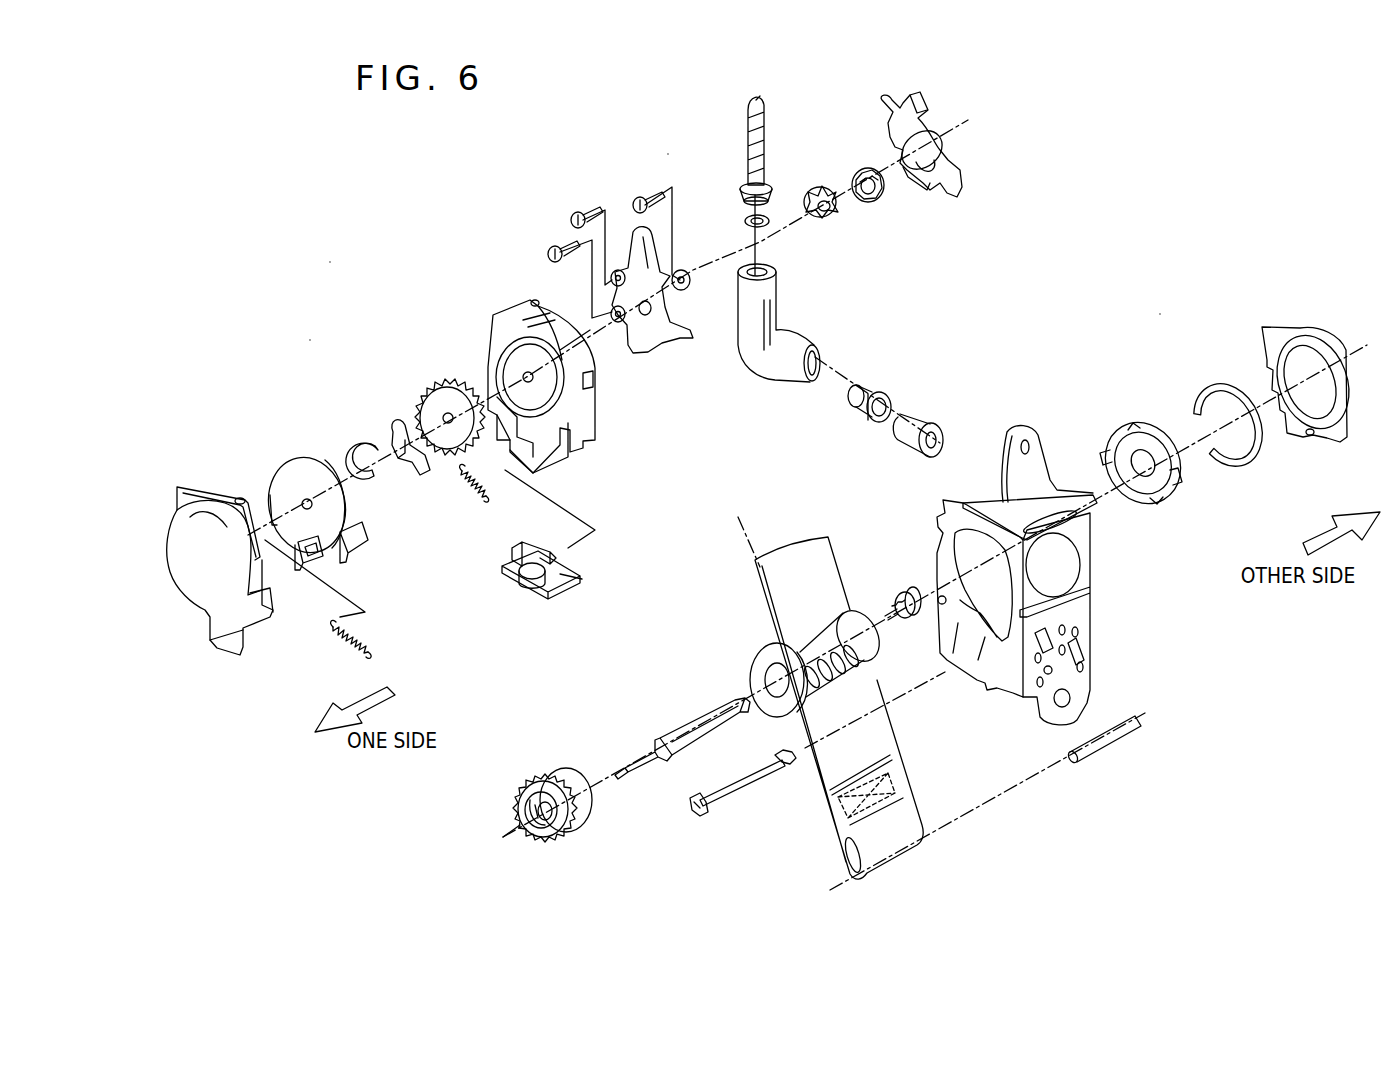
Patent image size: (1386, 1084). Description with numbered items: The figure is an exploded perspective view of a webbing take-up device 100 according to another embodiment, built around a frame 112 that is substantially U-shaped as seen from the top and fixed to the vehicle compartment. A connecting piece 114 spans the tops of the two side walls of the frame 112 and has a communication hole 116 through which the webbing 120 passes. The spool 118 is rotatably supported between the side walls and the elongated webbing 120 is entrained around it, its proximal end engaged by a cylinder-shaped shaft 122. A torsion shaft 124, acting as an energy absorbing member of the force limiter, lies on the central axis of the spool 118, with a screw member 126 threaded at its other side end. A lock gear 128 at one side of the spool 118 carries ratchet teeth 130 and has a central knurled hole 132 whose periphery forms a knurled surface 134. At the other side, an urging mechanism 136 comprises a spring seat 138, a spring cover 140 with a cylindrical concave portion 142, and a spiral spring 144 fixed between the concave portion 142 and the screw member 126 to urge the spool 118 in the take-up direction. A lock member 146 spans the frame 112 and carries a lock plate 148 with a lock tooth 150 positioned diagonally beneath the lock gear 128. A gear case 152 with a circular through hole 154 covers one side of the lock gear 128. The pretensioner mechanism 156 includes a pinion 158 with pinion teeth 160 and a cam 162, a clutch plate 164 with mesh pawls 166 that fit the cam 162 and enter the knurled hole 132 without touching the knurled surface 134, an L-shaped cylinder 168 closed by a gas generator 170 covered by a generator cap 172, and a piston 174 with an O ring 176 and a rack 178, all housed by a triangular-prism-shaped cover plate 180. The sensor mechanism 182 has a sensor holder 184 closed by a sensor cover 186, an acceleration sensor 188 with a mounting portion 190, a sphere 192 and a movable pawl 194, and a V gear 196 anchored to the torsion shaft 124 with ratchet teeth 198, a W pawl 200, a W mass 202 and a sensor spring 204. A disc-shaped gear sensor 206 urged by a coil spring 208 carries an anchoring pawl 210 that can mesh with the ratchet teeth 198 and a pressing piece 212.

The webbing take-up device 100 is at (330, 258).
The frame 112 is at (942, 545).
The connecting piece 114 is at (1050, 428).
The communication hole 116 is at (1074, 496).
The spool 118 is at (760, 650).
The webbing 120 is at (822, 548).
The shaft 122 is at (1115, 742).
The torsion shaft 124 is at (690, 725).
The screw member 126 is at (900, 595).
The lock gear 128 is at (555, 772).
The ratchet teeth 130 is at (580, 808).
The knurled hole 132 is at (525, 815).
The knurled surface 134 is at (533, 830).
The urging mechanism 136 is at (1160, 312).
The spring seat 138 is at (1140, 425).
The spring cover 140 is at (1322, 335).
The concave portion 142 is at (1320, 418).
The spiral spring 144 is at (1224, 382).
The lock member 146 is at (758, 800).
The lock plate 148 is at (698, 812).
The lock tooth 150 is at (698, 780).
The gear case 152 is at (884, 108).
The through hole 154 is at (925, 168).
The pretensioner mechanism 156 is at (668, 152).
The pinion 158 is at (815, 182).
The pinion teeth 160 is at (829, 220).
The cam 162 is at (853, 205).
The clutch plate 164 is at (858, 160).
The mesh pawls 166 is at (872, 195).
The cylinder 168 is at (778, 310).
The gas generator 170 is at (855, 392).
The generator cap 172 is at (914, 425).
The piston 174 is at (745, 108).
The O ring 176 is at (745, 219).
The rack 178 is at (765, 108).
The cover plate 180 is at (635, 240).
The sensor mechanism 182 is at (310, 338).
The sensor holder 184 is at (515, 306).
The sensor cover 186 is at (200, 485).
The acceleration sensor 188 is at (568, 570).
The mounting portion 190 is at (498, 566).
The sphere 192 is at (532, 586).
The movable pawl 194 is at (545, 550).
The V gear 196 is at (440, 383).
The ratchet teeth 198 is at (528, 499).
The W pawl 200 is at (398, 428).
The W mass 202 is at (356, 446).
The sensor spring 204 is at (470, 492).
The gear sensor 206 is at (285, 468).
The coil spring 208 is at (352, 635).
The anchoring pawl 210 is at (345, 562).
The pressing piece 212 is at (372, 540).